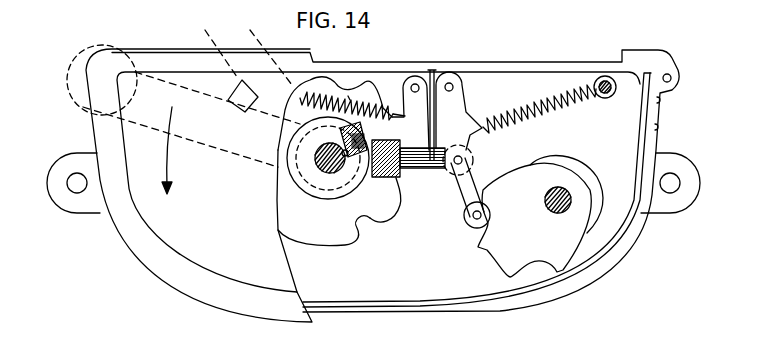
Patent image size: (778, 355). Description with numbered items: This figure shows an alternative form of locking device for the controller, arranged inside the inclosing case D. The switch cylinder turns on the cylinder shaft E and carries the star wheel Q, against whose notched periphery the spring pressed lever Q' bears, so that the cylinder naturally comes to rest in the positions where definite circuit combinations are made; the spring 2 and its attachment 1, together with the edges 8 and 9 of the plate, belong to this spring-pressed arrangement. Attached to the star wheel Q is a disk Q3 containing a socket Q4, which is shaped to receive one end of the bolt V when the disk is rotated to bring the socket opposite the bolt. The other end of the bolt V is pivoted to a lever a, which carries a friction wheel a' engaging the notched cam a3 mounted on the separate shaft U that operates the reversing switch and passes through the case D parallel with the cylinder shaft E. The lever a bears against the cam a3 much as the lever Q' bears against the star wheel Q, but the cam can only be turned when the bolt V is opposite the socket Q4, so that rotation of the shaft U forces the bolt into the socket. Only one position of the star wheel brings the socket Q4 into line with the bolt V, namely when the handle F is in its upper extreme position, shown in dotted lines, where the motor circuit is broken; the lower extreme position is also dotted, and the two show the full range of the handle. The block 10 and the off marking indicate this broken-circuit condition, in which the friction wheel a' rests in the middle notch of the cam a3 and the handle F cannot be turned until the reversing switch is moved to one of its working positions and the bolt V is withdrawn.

The handle F is at (68, 89).
The inclosing case D is at (600, 250).
The star wheel Q is at (334, 184).
The edge of plate Q 8 is at (324, 231).
The edge of plate Q 9 is at (385, 200).
The bolt V is at (365, 191).
The spring 2 is at (352, 98).
The spring attachment 1 is at (348, 96).
The disk Q3 is at (317, 193).
The cylinder shaft E is at (316, 152).
The off position key off is at (388, 130).
The socket Q4 is at (346, 157).
The slide block 10 is at (406, 148).
The spring pressed lever Q' is at (415, 100).
The lever a is at (459, 123).
The friction wheel a' is at (465, 197).
The notched cam a3 is at (540, 216).
The shaft U is at (545, 197).